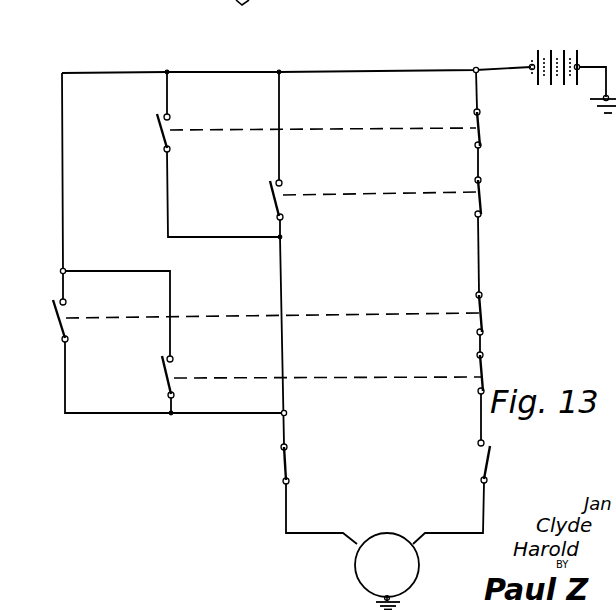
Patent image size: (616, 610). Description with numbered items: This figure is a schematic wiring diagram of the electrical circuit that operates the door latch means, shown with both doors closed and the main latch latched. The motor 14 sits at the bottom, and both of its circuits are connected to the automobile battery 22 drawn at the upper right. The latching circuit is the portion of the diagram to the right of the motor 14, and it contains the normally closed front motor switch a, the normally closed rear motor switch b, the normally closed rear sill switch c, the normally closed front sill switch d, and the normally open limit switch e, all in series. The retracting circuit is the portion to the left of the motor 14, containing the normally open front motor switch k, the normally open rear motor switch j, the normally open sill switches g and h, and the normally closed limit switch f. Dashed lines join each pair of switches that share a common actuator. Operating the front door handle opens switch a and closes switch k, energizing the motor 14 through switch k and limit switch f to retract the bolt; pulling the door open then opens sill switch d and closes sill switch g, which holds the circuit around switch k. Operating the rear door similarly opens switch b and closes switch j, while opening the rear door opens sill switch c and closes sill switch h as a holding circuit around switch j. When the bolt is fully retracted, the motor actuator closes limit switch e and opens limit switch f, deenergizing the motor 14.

The automobile battery 22 is at (557, 52).
The motor 14 is at (358, 571).
The motor switch a is at (481, 134).
The motor switch b is at (482, 197).
The sill switch c is at (483, 303).
The sill switch d is at (484, 359).
The motor limit switch e is at (491, 457).
The motor limit switch f is at (282, 462).
The sill switch g is at (165, 366).
The sill switch h is at (57, 314).
The motor switch j is at (276, 207).
The motor switch k is at (163, 134).